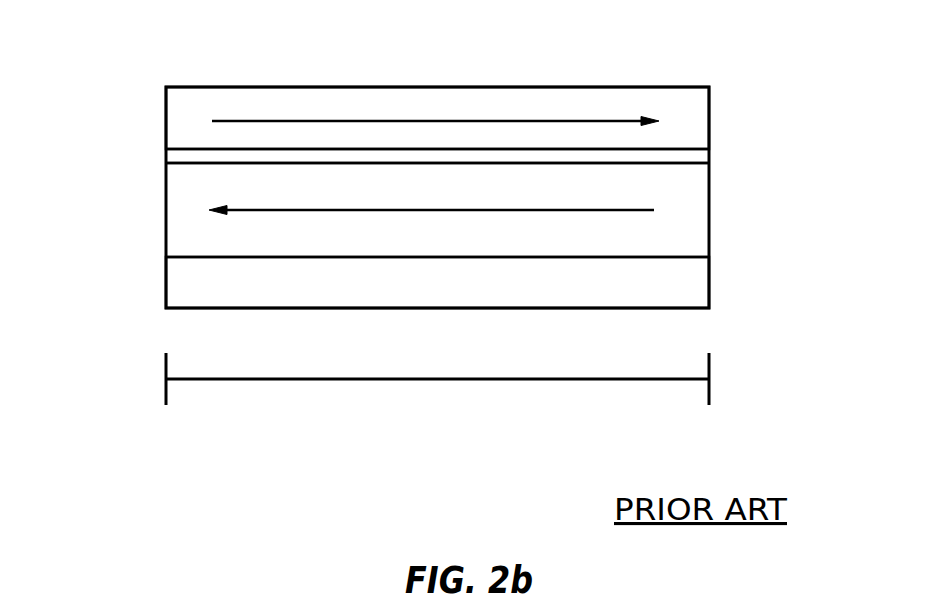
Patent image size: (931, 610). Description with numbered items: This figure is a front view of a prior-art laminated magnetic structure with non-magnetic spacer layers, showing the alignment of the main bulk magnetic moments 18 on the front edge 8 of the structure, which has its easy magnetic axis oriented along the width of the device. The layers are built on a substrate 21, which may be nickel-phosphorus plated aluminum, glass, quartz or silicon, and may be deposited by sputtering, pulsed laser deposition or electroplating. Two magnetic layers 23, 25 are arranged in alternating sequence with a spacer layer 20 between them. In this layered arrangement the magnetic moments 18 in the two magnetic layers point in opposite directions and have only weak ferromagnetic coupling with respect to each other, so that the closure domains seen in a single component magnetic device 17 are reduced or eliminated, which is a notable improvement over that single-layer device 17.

The magnetic device 17 is at (183, 112).
The magnetic moments 18 is at (437, 121).
The magnetic layer 23 is at (700, 127).
The spacer layer 20 is at (704, 155).
The magnetic layer 25 is at (697, 224).
The substrate 21 is at (699, 291).
The front edge 8 is at (437, 381).